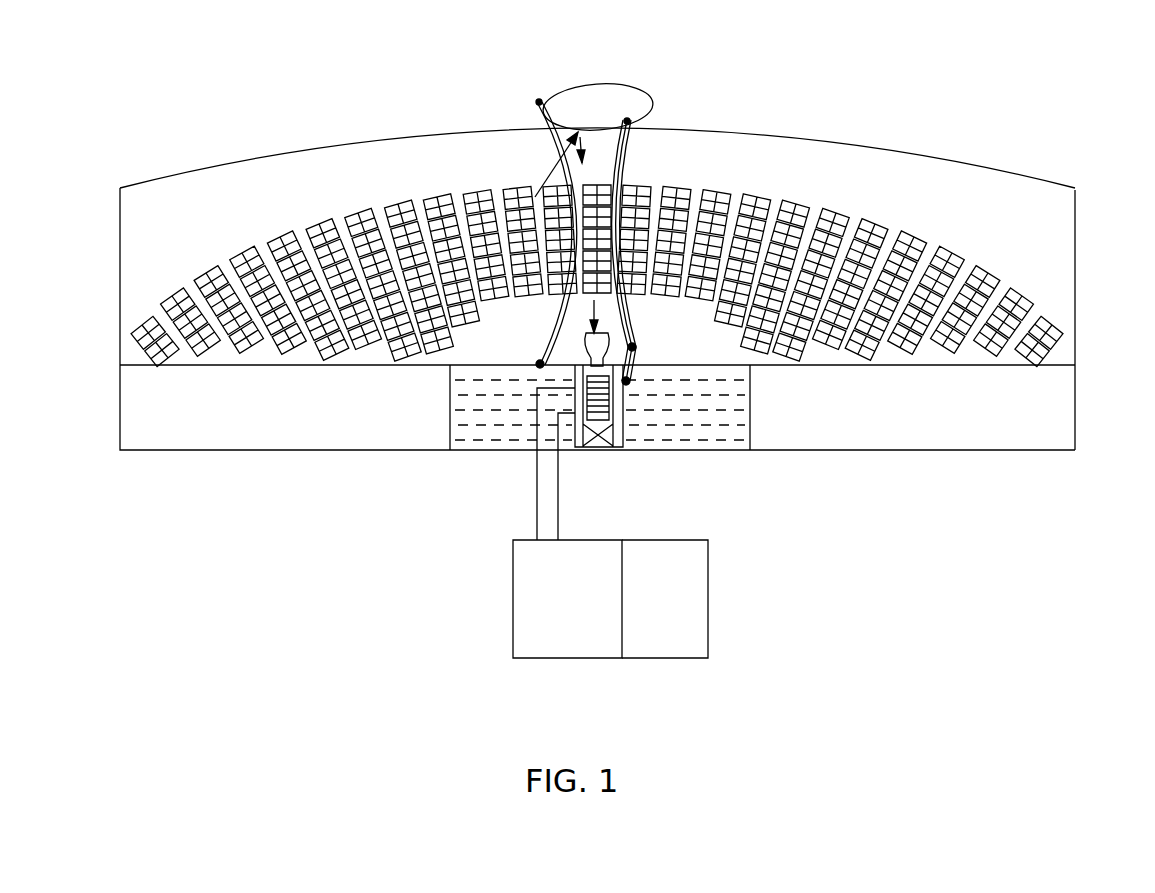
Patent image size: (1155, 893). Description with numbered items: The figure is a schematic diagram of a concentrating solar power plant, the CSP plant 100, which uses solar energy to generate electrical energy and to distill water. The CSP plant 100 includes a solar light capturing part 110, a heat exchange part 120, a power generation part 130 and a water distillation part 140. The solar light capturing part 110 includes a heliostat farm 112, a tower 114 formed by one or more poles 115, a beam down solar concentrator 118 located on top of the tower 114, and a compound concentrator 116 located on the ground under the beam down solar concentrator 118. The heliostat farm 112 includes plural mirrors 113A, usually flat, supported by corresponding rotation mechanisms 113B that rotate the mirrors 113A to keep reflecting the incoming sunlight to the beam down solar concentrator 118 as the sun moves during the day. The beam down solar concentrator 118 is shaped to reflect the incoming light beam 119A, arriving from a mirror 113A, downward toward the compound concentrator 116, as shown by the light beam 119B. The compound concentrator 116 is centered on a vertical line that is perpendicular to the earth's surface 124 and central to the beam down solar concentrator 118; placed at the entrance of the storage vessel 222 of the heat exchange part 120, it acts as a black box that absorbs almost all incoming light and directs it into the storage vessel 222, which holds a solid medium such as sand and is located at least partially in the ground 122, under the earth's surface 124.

The CSP plant 100 is at (950, 115).
The solar light capturing part 110 is at (445, 160).
The heliostat farm 112 is at (275, 213).
The mirror 113A is at (1060, 322).
The rotation mechanism 113B is at (1047, 350).
The tower 114 is at (637, 157).
The pole 115 is at (543, 143).
The compound concentrator 116 is at (585, 350).
The beam down solar concentrator 118 is at (640, 86).
The incoming light beam 119A is at (562, 122).
The light beam 119B is at (590, 130).
The heat exchange part 120 is at (632, 418).
The ground 122 is at (718, 435).
The earth's surface 124 is at (712, 351).
The storage vessel 222 is at (620, 383).
The power generation part 130 is at (505, 612).
The water distillation part 140 is at (715, 637).